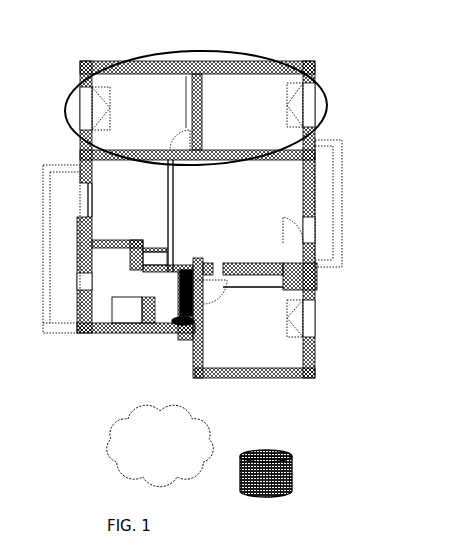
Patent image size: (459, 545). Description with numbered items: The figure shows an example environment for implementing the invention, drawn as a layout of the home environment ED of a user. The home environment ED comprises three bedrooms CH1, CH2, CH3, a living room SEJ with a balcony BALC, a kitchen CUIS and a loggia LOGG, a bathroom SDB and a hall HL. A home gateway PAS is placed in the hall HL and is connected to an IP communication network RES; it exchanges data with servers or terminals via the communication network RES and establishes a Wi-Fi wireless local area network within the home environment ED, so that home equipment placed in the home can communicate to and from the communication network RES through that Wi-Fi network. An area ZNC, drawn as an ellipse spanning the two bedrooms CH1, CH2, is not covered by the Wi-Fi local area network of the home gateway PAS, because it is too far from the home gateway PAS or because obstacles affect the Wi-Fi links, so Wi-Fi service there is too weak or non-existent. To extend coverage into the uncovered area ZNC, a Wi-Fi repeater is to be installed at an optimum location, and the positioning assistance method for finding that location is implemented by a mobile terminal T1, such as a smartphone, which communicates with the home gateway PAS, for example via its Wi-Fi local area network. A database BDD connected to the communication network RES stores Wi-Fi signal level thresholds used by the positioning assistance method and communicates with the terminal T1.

The uncovered area ZNC is at (325, 103).
The home environment ED is at (76, 153).
The loggia LOGG is at (61, 249).
The bedroom CH1 is at (142, 112).
The bedroom CH2 is at (252, 112).
The bedroom CH3 is at (253, 329).
The kitchen CUIS is at (130, 200).
The living room SEJ is at (238, 211).
The bathroom SDB is at (135, 297).
The balcony BALC is at (315, 203).
The mobile terminal T1 is at (176, 297).
The home gateway PAS is at (180, 326).
The hall HL is at (177, 310).
The communication network RES is at (183, 326).
The database BDD is at (195, 447).